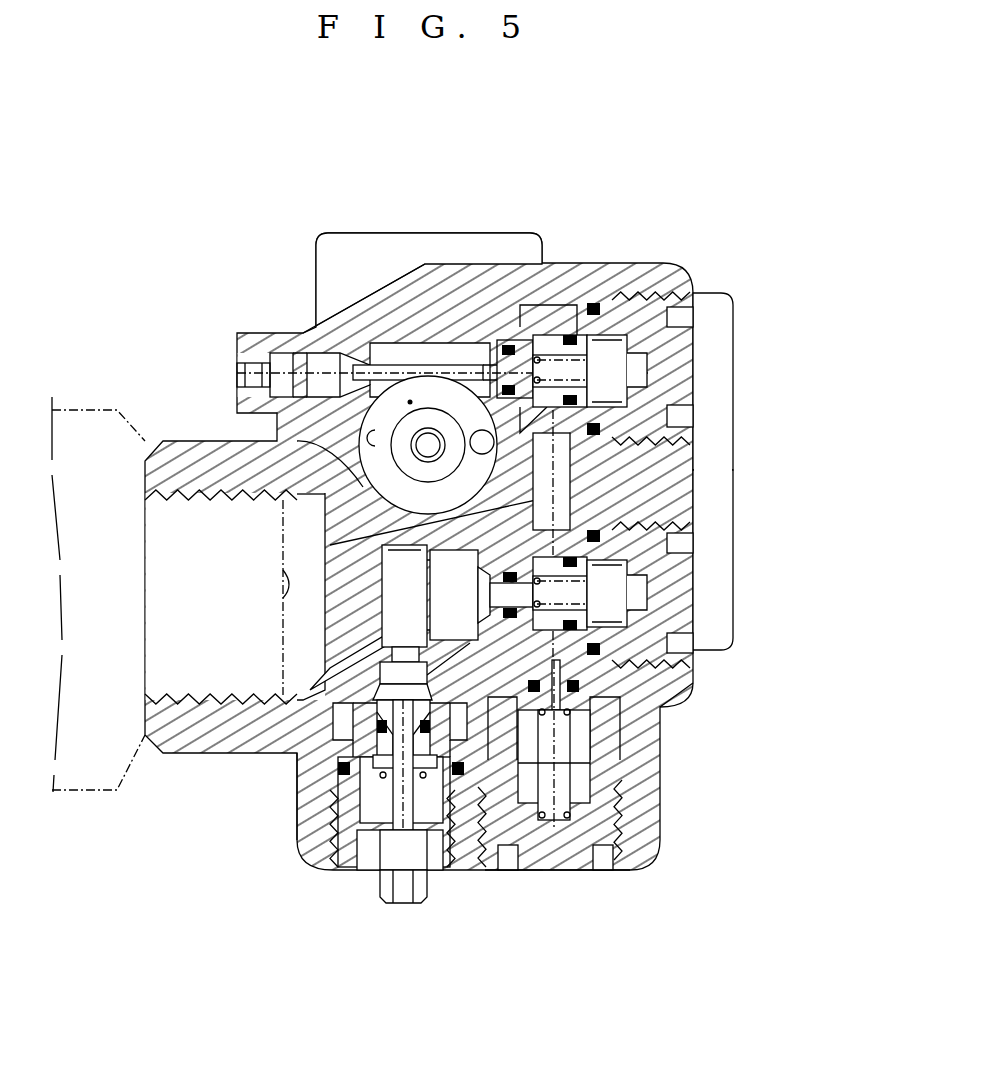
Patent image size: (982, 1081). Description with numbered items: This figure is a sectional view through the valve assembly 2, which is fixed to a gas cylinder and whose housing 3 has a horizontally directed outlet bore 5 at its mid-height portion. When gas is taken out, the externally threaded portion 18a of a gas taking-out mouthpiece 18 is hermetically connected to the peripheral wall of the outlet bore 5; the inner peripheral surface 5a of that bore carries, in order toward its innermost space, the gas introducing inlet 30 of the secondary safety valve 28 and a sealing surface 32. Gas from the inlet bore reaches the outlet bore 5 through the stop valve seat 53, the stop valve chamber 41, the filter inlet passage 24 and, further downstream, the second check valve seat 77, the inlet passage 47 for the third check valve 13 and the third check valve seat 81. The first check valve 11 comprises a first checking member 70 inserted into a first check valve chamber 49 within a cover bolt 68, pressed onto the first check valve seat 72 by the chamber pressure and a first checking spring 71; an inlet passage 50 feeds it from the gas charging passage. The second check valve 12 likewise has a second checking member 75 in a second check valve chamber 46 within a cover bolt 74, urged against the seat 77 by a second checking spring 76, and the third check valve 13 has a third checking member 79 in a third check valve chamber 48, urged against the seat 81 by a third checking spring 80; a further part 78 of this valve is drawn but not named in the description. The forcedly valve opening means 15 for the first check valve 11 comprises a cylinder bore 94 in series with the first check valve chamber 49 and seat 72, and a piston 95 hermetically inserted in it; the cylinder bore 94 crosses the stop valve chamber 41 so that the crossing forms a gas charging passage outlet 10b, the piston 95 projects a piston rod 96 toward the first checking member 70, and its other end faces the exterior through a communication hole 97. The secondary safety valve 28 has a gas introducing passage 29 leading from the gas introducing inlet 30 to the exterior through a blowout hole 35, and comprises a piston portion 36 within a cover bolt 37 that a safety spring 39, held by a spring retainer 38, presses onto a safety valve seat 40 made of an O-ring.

The valve assembly 2 is at (573, 172).
The housing 3 is at (742, 497).
The outlet bore 5 is at (266, 593).
The inner peripheral surface 5a is at (343, 663).
The gas charging passage outlet 10b is at (410, 400).
The first check valve 11 is at (712, 360).
The second check valve 12 is at (565, 912).
The third check valve 13 is at (715, 597).
The forcedly valve opening means 15 is at (330, 325).
The gas taking-out mouthpiece 18 is at (117, 793).
The externally threaded portion 18a is at (287, 577).
The filter inlet passage 24 is at (482, 430).
The secondary safety valve 28 is at (392, 915).
The gas introducing passage 29 is at (290, 753).
The gas introducing inlet 30 is at (390, 647).
The sealing surface 32 is at (457, 630).
The blowout hole 35 is at (380, 857).
The piston portion 36 is at (327, 807).
The cover bolt 37 is at (340, 870).
The spring retainer 38 is at (413, 907).
The safety spring 39 is at (450, 873).
The safety valve seat 40 is at (292, 760).
The stop valve chamber 41 is at (240, 440).
The second check valve chamber 46 is at (623, 808).
The inlet passage 47 is at (593, 685).
The third check valve chamber 48 is at (707, 652).
The first check valve chamber 49 is at (613, 340).
The inlet passage 50 is at (683, 457).
The stop valve seat 53 is at (390, 520).
The cover bolt 68 is at (765, 471).
The first checking member 70 is at (548, 325).
The first checking spring 71 is at (650, 362).
The first check valve seat 72 is at (512, 300).
The cover bolt 74 is at (573, 877).
The second checking member 75 is at (577, 775).
The second checking spring 76 is at (543, 870).
The second check valve seat 77 is at (587, 727).
The seal carrier 78 is at (693, 605).
The third checking member 79 is at (667, 563).
The third checking spring 80 is at (650, 582).
The third check valve seat 81 is at (480, 553).
The cylinder bore 94 is at (472, 345).
The piston 95 is at (283, 360).
The piston rod 96 is at (343, 323).
The communication hole 97 is at (240, 377).